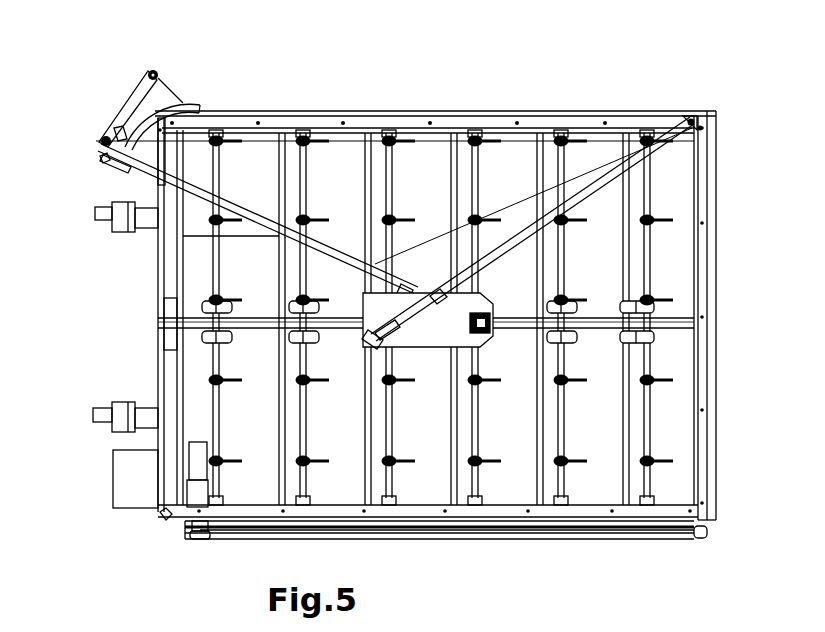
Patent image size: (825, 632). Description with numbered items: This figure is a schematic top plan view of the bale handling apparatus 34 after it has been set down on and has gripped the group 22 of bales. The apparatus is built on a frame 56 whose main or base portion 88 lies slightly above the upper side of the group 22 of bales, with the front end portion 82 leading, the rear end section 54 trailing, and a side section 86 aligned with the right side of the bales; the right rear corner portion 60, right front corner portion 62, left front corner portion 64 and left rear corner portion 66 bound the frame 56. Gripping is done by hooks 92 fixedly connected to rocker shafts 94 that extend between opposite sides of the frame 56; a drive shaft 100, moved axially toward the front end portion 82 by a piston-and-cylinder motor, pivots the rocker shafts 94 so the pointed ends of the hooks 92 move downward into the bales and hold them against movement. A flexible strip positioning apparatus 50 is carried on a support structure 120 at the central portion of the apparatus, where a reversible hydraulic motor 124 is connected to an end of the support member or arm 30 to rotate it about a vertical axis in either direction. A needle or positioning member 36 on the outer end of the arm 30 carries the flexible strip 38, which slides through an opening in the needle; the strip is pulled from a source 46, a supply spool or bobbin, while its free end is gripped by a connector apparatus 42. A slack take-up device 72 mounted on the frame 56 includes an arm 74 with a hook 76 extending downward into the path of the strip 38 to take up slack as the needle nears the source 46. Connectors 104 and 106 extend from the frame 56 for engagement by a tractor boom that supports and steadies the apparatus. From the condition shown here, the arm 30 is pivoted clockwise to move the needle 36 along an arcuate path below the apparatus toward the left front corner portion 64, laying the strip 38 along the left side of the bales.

The group of bales 22 is at (436, 328).
The support member or arm 30 is at (155, 165).
The bale handling apparatus 34 is at (510, 522).
The needle or positioning member 36 is at (180, 100).
The flexible strip 38 is at (183, 107).
The connector apparatus 42 is at (128, 481).
The source of the flexible strip 46 is at (195, 265).
The flexible strip positioning apparatus 50 is at (149, 103).
The rear end section 54 is at (168, 373).
The frame 56 is at (712, 373).
The right rear corner portion 60 is at (200, 542).
The right front corner portion 62 is at (700, 510).
The left front corner portion 64 is at (700, 126).
The left rear corner portion 66 is at (150, 122).
The slack take-up device 72 is at (646, 104).
The arm 74 is at (514, 243).
The hook 76 is at (692, 120).
The front end portion 82 is at (708, 266).
The side section 86 is at (418, 535).
The main or base portion 88 is at (573, 515).
The hooks 92 is at (224, 222).
The rocker shafts 94 is at (393, 412).
The drive shaft 100 is at (593, 323).
The connector 104 is at (118, 225).
The connector 106 is at (118, 415).
The support structure 120 is at (374, 355).
The reversible hydraulic motor 124 is at (489, 328).